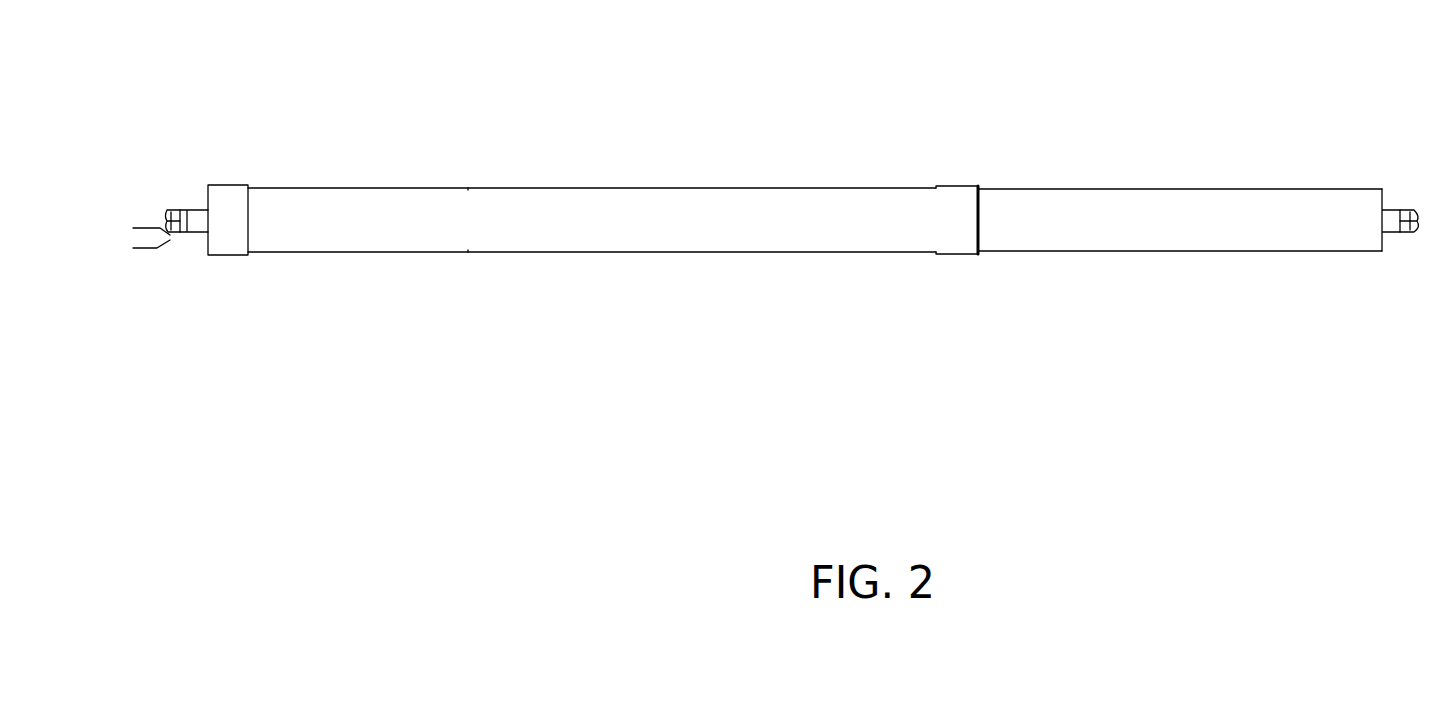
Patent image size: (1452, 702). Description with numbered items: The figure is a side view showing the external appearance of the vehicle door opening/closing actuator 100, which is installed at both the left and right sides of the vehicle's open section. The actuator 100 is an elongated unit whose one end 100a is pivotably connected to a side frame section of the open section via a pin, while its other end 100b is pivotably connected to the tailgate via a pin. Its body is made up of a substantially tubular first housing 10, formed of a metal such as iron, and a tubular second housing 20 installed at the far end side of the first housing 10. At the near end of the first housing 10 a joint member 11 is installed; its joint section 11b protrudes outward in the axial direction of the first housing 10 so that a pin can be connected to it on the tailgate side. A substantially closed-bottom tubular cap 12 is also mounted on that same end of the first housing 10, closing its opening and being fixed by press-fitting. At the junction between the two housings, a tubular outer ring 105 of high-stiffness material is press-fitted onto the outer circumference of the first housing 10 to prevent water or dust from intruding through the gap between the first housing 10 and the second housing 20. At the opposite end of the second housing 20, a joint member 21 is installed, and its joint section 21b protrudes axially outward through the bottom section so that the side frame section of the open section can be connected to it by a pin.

The actuator 100 is at (845, 129).
The first housing 10 is at (538, 188).
The cap 12 is at (228, 258).
The outer ring 105 is at (953, 186).
The second housing 20 is at (1173, 189).
The joint member 11 is at (181, 154).
The joint section 11b is at (178, 208).
The joint member 21 is at (1403, 164).
The joint section 21b is at (1409, 208).
The one end 100a is at (1408, 235).
The other end 100b is at (180, 238).